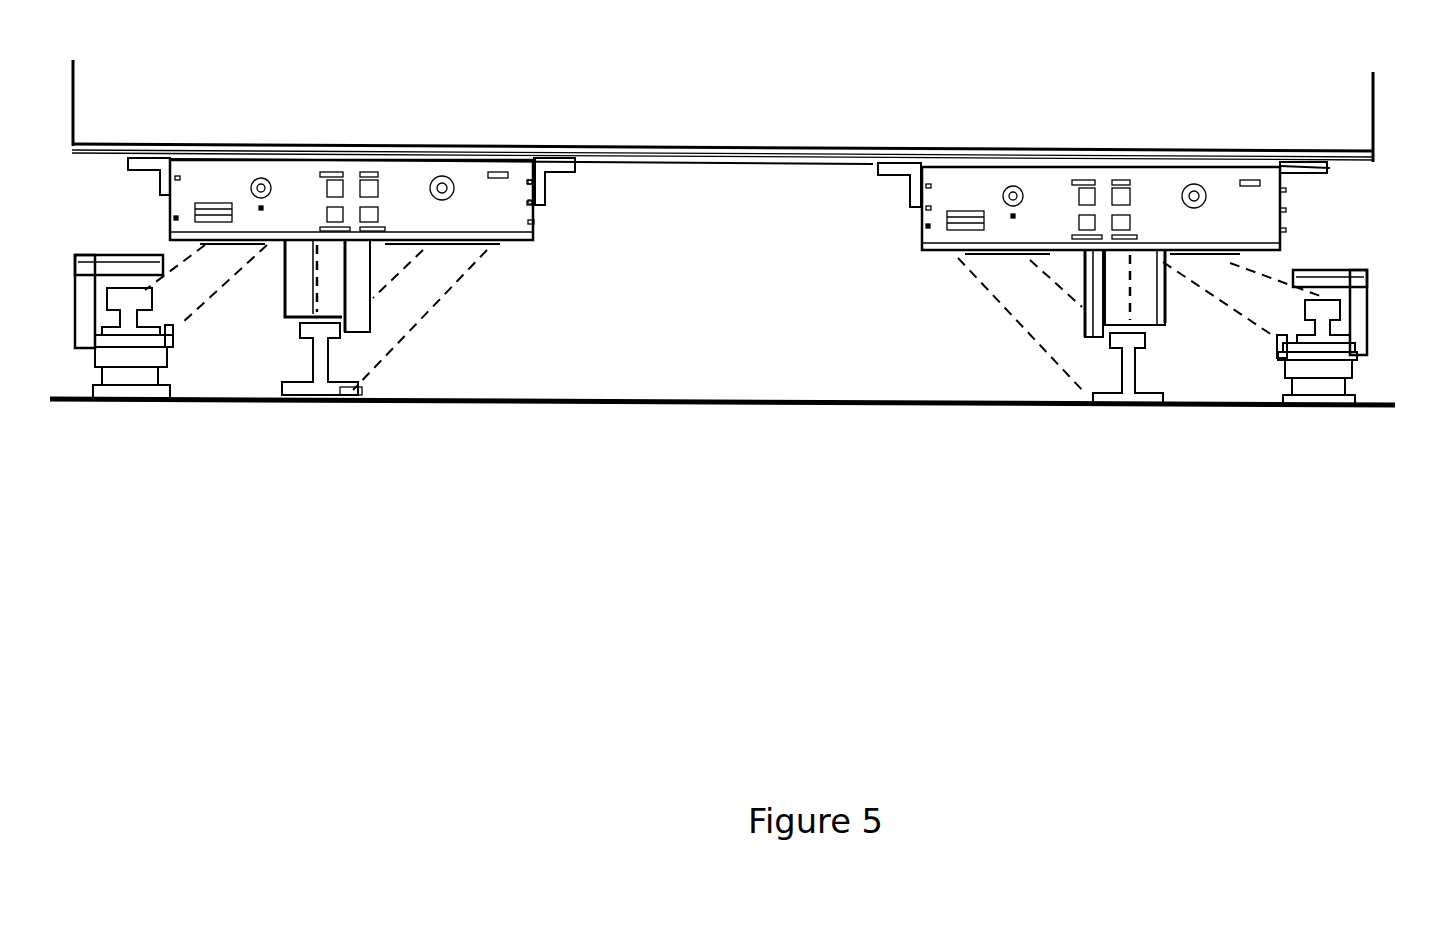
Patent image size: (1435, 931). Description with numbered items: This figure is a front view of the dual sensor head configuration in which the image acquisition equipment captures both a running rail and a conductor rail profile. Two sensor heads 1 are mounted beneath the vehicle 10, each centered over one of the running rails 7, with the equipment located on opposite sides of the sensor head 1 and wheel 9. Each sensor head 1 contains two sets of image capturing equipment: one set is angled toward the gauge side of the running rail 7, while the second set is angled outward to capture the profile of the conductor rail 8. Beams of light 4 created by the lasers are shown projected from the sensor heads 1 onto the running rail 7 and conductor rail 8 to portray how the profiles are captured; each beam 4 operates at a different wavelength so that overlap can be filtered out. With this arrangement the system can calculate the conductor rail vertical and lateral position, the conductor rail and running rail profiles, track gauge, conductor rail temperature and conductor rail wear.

The sensor head 1 is at (400, 152).
The beam of light 4 is at (197, 267).
The running rail 7 is at (327, 390).
The conductor rail 8 is at (135, 297).
The wheel 9 is at (347, 282).
The vehicle 10 is at (677, 147).